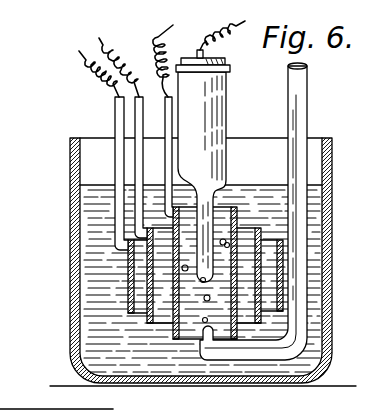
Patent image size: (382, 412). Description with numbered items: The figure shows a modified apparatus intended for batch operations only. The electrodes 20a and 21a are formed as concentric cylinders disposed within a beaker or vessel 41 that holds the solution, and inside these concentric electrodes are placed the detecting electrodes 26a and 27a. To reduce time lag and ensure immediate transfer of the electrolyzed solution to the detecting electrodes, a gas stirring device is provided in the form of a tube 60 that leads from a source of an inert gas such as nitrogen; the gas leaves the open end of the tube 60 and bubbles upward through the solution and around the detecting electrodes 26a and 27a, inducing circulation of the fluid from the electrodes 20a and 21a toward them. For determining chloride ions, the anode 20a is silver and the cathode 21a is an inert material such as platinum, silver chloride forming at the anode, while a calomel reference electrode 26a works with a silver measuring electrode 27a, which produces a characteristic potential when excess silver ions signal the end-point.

The beaker or vessel 41 is at (71, 160).
The cathode electrode 21a is at (100, 270).
The anode electrode 20a is at (147, 315).
The measuring electrode 27a is at (235, 210).
The reference electrode 26a is at (207, 99).
The gas stirring tube 60 is at (305, 102).